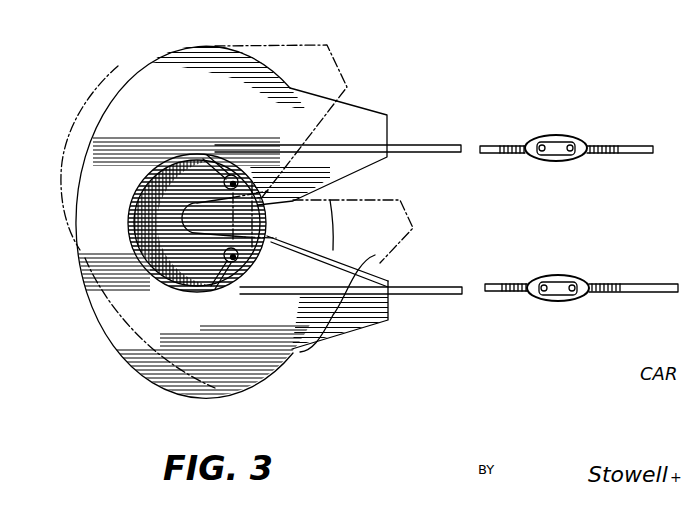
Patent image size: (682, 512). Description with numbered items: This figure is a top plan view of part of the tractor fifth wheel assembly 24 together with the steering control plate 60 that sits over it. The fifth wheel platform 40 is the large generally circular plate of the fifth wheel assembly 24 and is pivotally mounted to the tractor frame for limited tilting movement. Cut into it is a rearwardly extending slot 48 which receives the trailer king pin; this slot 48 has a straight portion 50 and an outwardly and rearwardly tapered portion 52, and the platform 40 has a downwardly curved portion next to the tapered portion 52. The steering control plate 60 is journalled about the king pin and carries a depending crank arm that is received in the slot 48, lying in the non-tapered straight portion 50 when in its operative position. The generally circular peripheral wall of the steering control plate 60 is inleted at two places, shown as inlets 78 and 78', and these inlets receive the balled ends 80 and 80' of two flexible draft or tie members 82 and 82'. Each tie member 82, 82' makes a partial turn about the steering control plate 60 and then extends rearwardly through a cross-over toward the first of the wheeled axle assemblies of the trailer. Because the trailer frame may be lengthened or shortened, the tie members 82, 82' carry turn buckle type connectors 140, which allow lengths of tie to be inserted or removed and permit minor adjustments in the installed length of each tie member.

The fifth wheel platform 40 is at (137, 92).
The tractor fifth wheel assembly 24 is at (433, 78).
The slot 48 is at (325, 250).
The straight portion 50 is at (256, 260).
The tapered portion 52 is at (375, 255).
The steering control plate 60 is at (186, 219).
The inlet 78 is at (204, 180).
The inlet 78' is at (204, 255).
The balled end 80 is at (240, 143).
The balled end 80' is at (224, 294).
The tie member 82 is at (343, 124).
The tie member 82' is at (351, 314).
The turn buckle type connector 140 is at (560, 135).